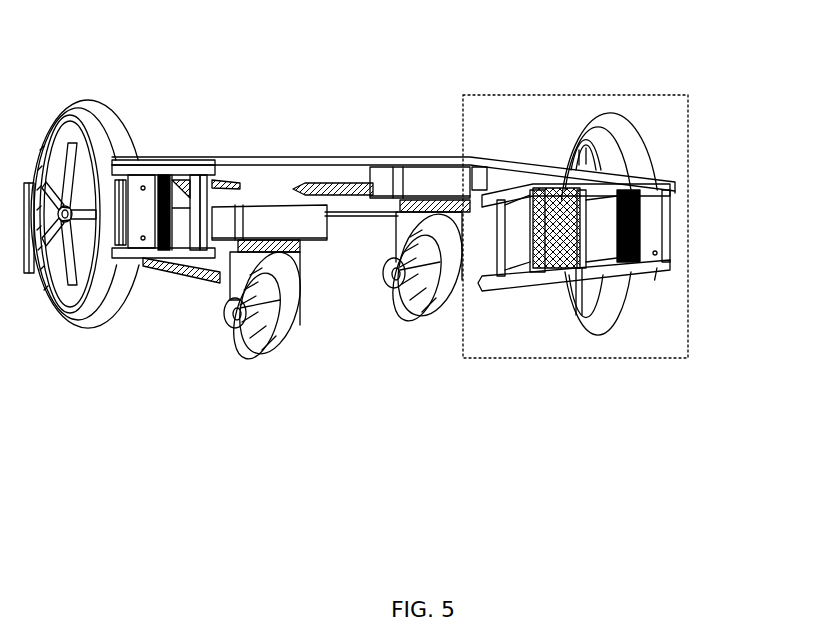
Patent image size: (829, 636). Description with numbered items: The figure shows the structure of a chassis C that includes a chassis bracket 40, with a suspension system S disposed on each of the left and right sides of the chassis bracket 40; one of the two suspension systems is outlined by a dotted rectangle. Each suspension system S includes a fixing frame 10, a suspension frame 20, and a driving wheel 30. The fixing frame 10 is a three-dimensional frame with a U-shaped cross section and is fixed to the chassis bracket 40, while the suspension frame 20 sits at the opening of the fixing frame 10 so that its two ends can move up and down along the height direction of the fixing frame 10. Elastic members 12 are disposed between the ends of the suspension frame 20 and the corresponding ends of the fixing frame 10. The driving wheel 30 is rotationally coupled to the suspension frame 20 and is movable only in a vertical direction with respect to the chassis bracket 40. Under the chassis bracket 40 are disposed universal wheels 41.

The fixing frame 10 is at (145, 265).
The elastic member 12 is at (172, 258).
The suspension frame 20 is at (612, 227).
The driving wheel 30 is at (107, 130).
The chassis bracket 40 is at (292, 173).
The universal wheel 41 is at (423, 313).
The suspension system S is at (692, 117).
The chassis C is at (440, 34).